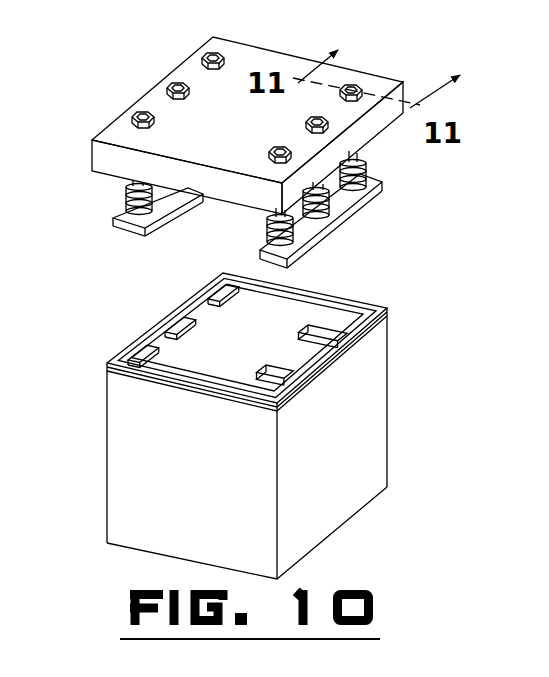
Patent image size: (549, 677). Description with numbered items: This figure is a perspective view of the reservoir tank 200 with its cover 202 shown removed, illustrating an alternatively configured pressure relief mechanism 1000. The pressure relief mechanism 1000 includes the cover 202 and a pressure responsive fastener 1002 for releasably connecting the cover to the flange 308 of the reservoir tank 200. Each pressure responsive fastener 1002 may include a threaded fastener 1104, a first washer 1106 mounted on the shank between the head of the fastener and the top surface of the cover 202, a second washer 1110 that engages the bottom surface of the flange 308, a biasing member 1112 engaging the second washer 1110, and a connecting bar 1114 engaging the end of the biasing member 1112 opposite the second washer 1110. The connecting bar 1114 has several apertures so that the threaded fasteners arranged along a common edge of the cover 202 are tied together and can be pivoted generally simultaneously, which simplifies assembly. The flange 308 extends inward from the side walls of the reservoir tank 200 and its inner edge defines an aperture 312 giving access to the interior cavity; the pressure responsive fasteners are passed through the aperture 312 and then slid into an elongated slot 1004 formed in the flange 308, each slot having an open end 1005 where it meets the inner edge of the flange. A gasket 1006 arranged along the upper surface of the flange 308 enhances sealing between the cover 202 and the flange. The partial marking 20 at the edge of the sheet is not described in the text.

The pressure relief mechanism 1000 is at (378, 50).
The cover 202 is at (178, 86).
The threaded fastener 1104 is at (162, 80).
The first washer 1106 is at (153, 130).
The pressure responsive fastener 1002 is at (253, 228).
The connecting bar 1114 is at (325, 235).
The biasing member 1112 is at (330, 206).
The second washer 1110 is at (366, 163).
The reservoir tank 200 is at (388, 437).
The gasket 1006 is at (360, 303).
The elongated slot 1004 is at (222, 300).
The flange 308 is at (330, 338).
The open end 1005 is at (291, 380).
The aperture 312 is at (243, 367).
The partial numeral 20 is at (534, 262).